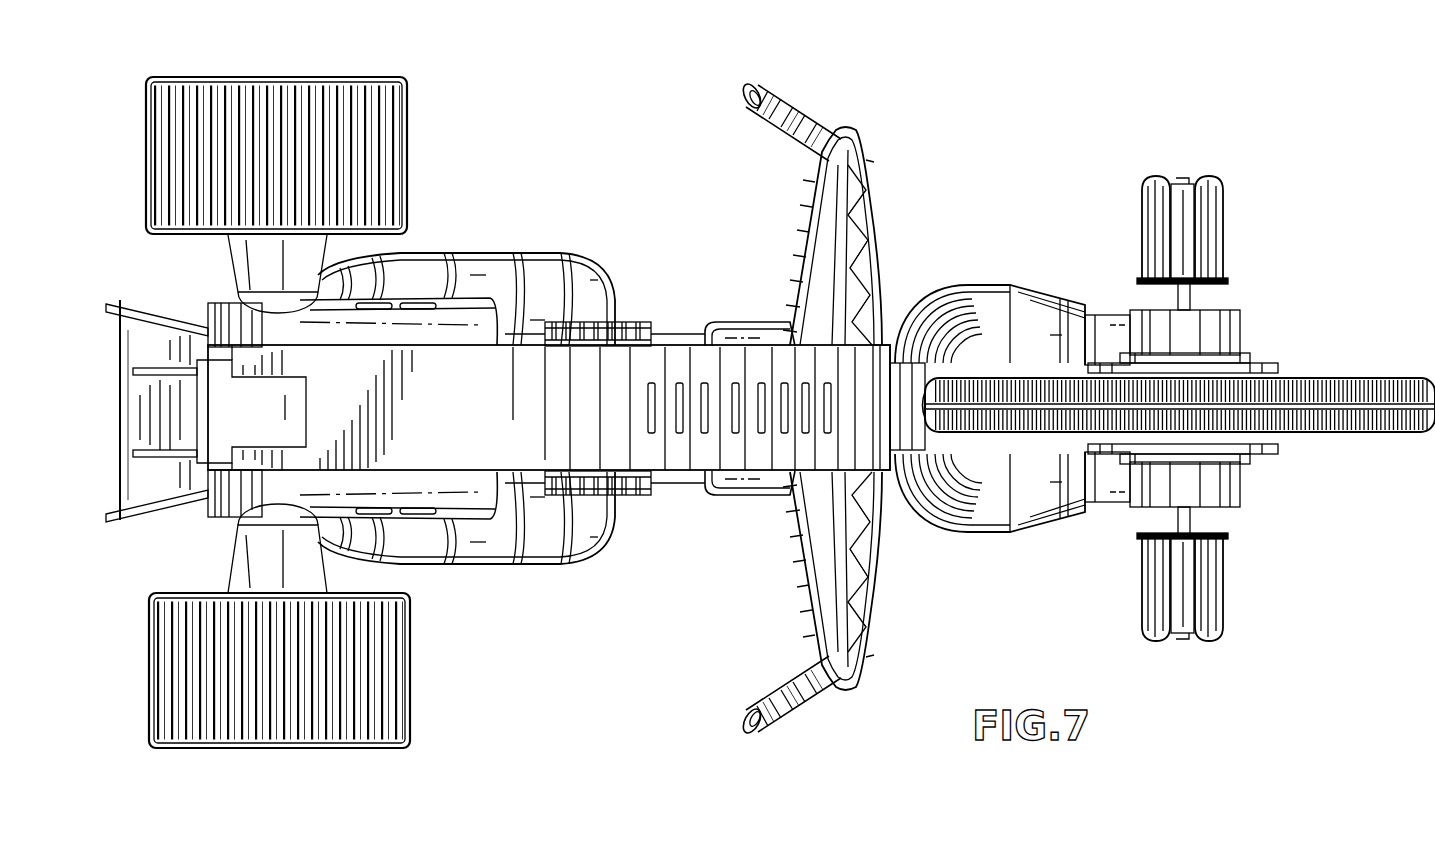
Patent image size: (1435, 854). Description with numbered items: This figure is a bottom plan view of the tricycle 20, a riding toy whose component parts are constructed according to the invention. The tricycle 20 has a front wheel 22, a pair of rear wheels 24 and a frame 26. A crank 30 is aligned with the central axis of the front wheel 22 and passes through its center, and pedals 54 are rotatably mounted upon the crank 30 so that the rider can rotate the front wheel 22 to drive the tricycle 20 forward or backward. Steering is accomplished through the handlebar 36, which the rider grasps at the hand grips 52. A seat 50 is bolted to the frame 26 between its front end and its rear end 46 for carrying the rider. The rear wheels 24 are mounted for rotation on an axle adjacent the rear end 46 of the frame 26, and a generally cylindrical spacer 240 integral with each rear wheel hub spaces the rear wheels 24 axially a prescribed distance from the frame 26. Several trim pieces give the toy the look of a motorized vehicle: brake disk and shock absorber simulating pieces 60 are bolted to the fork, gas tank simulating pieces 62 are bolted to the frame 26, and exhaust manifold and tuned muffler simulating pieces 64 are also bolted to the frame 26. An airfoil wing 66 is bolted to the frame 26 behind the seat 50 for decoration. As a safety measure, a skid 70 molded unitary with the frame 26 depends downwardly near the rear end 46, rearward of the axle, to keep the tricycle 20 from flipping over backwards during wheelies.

The tricycle 20 is at (1053, 284).
The front wheel 22 is at (1348, 442).
The rear wheels 24 is at (418, 121).
The frame 26 is at (566, 407).
The crank 30 is at (1192, 523).
The handlebar 36 is at (850, 214).
The rear end 46 is at (200, 425).
The seat 50 is at (586, 283).
The hand grips 52 is at (786, 101).
The pedals 54 is at (1222, 204).
The brake disk and shock absorber simulating pieces 60 is at (1000, 300).
The gas tank simulating pieces 62 is at (745, 318).
The exhaust manifold and tuned muffler simulating pieces 64 is at (634, 322).
The airfoil wing 66 is at (176, 335).
The skid 70 is at (208, 480).
The spacer 240 is at (250, 265).